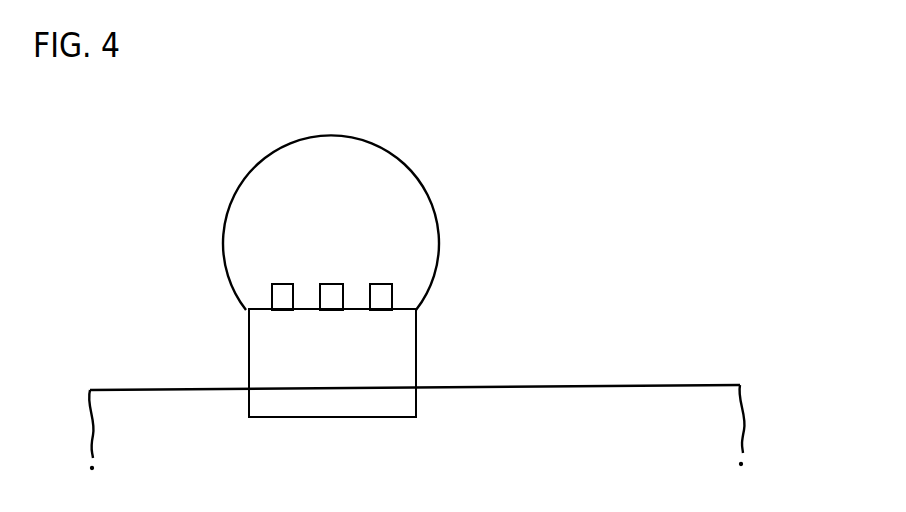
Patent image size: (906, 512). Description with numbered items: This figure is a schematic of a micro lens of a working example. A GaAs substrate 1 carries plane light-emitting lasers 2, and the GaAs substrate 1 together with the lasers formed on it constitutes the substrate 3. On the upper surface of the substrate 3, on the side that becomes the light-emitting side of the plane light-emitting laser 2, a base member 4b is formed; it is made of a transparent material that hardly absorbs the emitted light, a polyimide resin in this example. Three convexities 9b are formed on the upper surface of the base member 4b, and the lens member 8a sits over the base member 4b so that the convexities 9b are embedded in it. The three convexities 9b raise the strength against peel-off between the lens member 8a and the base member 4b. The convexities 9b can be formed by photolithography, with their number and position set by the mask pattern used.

The GaAs substrate 1 is at (163, 390).
The plane light-emitting laser 2 is at (348, 417).
The substrate 3 is at (742, 412).
The base member 4b is at (413, 357).
The lens member 8a is at (437, 270).
The convexity 9b is at (282, 284).